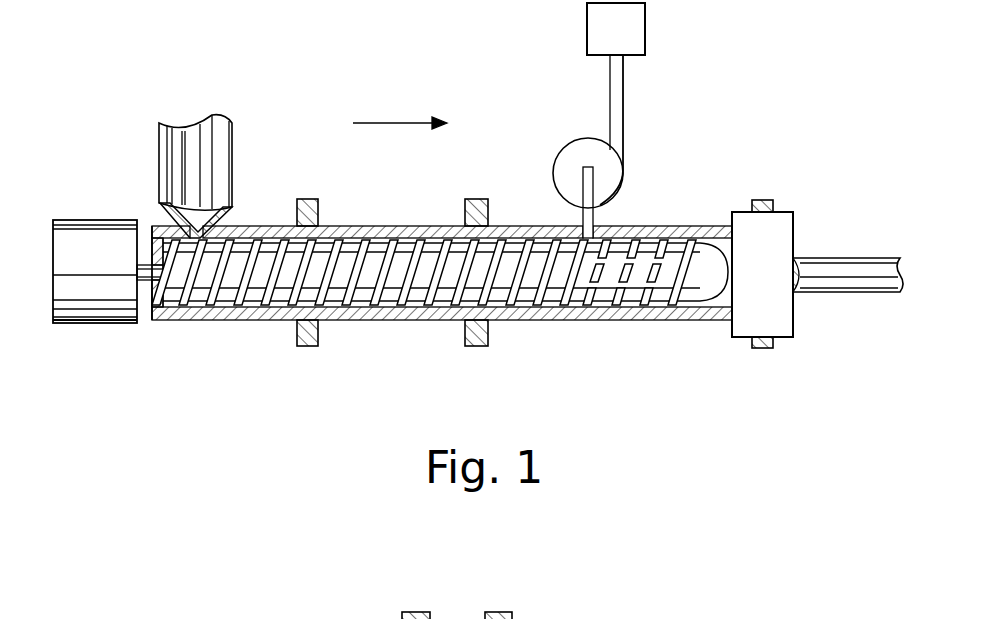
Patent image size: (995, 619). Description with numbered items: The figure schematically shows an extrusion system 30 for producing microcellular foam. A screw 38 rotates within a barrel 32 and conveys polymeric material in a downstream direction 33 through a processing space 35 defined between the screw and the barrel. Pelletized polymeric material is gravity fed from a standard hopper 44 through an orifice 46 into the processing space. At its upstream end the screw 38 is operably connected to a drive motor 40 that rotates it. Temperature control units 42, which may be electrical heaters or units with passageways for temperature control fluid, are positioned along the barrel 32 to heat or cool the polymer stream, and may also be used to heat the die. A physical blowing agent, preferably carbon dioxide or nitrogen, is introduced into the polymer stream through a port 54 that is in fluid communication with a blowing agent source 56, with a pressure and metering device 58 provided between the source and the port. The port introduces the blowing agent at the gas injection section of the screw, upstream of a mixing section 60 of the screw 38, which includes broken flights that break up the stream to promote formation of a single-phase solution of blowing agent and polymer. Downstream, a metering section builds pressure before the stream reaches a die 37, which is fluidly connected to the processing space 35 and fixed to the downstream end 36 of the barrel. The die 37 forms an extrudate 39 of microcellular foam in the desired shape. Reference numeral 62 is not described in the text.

The extrusion system 30 is at (305, 64).
The barrel 32 is at (227, 320).
The downstream direction 33 is at (400, 112).
The processing space 35 is at (380, 243).
The downstream end 36 is at (705, 320).
The die 37 is at (742, 212).
The screw 38 is at (403, 255).
The extrudate 39 is at (840, 258).
The drive motor 40 is at (92, 220).
The temperature control units 42 is at (305, 199).
The hopper 44 is at (188, 133).
The orifice 46 is at (190, 213).
The port 54 is at (588, 230).
The source 56 is at (647, 27).
The pressure and metering device 58 is at (578, 152).
The mixing section 60 is at (612, 321).
The mixing zone 62 is at (587, 307).